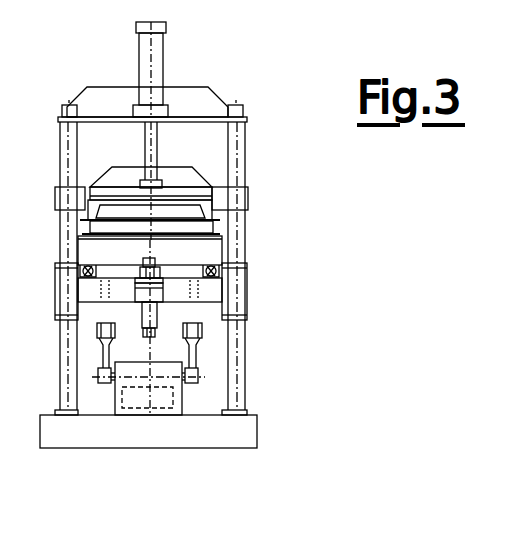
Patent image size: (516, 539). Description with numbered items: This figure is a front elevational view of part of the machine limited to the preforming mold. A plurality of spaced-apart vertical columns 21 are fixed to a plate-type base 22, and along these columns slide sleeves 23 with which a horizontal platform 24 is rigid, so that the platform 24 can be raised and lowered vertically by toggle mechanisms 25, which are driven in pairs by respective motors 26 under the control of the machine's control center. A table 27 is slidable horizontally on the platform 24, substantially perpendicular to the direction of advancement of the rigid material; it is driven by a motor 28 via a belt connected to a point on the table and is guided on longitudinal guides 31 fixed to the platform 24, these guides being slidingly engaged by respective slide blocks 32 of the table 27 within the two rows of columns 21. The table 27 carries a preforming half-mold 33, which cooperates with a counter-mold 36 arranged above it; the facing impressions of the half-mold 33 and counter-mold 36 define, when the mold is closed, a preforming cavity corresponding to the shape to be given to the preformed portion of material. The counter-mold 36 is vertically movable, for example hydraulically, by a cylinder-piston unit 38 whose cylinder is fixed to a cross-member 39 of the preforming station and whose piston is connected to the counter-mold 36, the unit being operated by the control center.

The vertical columns 21 is at (62, 391).
The plate-type base 22 is at (250, 438).
The sleeves 23 is at (62, 312).
The horizontal platform 24 is at (92, 300).
The toggle mechanisms 25 is at (214, 341).
The motors 26 is at (150, 415).
The table 27 is at (212, 252).
The motor 28 is at (143, 323).
The longitudinal guides 31 is at (86, 278).
The slide blocks 32 is at (84, 270).
The preforming half-mold 33 is at (206, 231).
The counter-mold 36 is at (115, 189).
The cylinder-piston unit 38 is at (160, 53).
The cross-member 39 is at (100, 118).